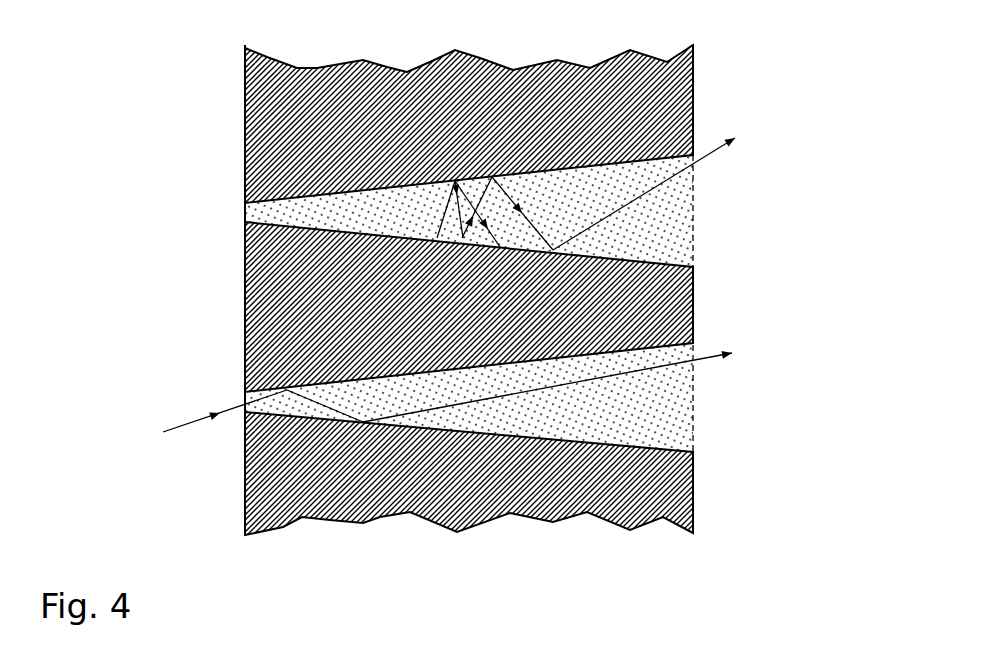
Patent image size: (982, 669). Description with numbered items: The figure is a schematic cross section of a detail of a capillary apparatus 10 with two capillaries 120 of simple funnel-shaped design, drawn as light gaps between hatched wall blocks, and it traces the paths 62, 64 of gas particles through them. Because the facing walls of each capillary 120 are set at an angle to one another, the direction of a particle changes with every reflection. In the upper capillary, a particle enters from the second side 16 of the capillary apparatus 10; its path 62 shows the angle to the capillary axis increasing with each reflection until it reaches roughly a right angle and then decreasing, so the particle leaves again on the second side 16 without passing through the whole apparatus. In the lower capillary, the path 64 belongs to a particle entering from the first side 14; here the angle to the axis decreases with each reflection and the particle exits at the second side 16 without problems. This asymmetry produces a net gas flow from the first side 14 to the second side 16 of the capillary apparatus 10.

The capillary apparatus 10 is at (470, 80).
The first side 14 is at (245, 114).
The second side 16 is at (693, 112).
The capillary 120 is at (290, 211).
The path 62 is at (660, 196).
The path 64 is at (742, 352).